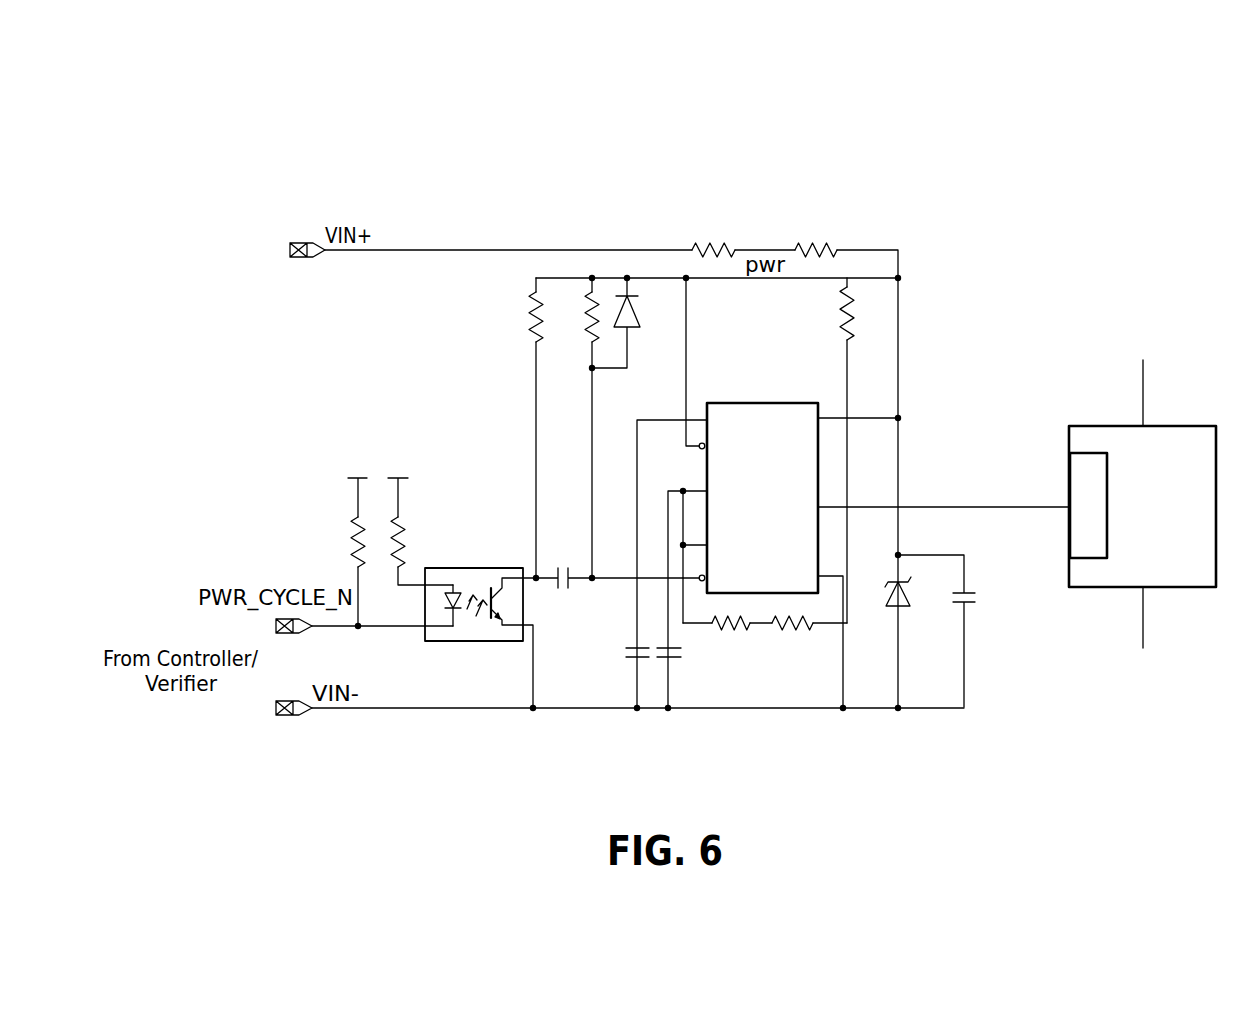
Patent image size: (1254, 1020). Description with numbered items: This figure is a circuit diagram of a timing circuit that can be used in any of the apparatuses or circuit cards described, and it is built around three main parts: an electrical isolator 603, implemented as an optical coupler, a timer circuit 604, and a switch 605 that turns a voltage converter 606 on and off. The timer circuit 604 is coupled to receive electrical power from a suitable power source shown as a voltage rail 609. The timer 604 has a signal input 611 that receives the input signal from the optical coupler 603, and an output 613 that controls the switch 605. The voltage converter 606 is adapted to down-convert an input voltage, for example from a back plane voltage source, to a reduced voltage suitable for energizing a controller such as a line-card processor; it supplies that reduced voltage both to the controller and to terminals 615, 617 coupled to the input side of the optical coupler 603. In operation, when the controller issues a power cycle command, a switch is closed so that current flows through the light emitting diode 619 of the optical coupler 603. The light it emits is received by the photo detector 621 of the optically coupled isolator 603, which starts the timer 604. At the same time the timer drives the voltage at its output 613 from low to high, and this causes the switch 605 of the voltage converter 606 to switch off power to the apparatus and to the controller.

The switch 605 is at (163, 186).
The voltage rail 609 is at (450, 250).
The timer circuit 604 is at (751, 380).
The output 613 is at (964, 507).
The voltage converter 606 is at (1177, 426).
The signal input 611 is at (610, 581).
The terminal 615 is at (350, 481).
The terminal 617 is at (407, 481).
The light emitting diode 619 is at (462, 613).
The photo detector 621 is at (499, 599).
The electrical isolator 603 is at (472, 629).